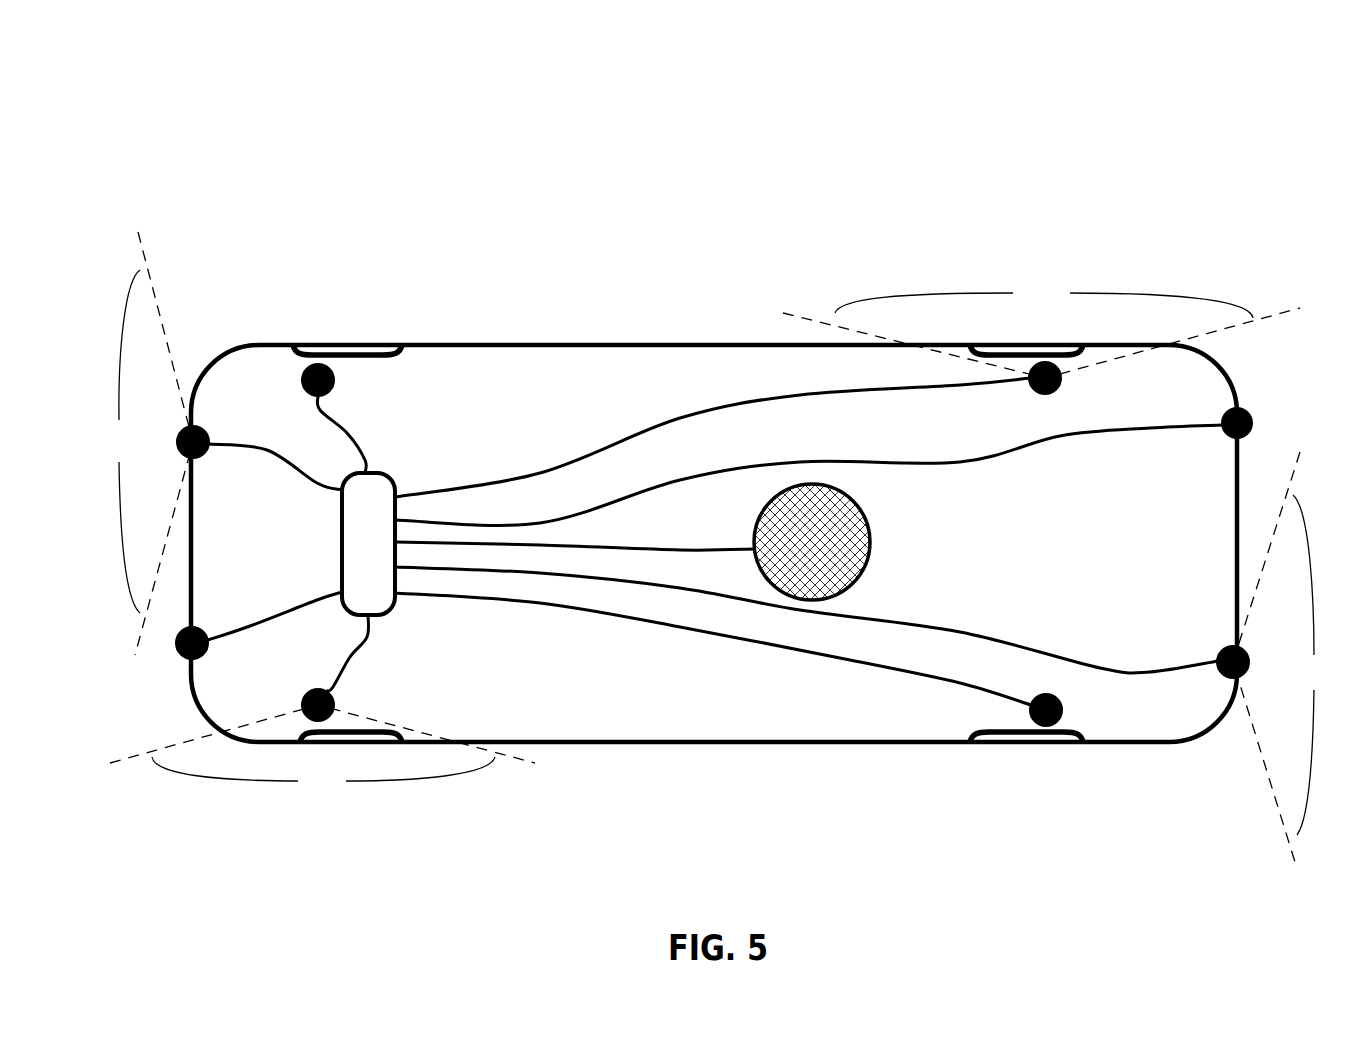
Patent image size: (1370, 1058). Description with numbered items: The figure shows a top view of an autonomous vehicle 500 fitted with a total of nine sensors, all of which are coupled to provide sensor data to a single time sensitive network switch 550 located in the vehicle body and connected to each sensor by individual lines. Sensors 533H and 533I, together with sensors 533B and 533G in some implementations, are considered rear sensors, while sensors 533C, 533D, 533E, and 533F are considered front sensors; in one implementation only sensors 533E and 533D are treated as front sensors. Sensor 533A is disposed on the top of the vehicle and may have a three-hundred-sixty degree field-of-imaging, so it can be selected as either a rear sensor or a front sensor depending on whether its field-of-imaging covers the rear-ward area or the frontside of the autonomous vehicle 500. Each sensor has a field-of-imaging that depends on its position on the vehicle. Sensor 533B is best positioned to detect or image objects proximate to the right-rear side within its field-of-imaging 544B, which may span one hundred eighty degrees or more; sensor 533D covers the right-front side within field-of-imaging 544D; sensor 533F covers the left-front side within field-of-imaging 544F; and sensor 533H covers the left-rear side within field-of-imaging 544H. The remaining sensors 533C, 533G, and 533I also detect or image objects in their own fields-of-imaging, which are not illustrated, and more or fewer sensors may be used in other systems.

The autonomous vehicle 500 is at (1240, 113).
The time sensitive network switch 550 is at (383, 555).
The sensor 533A is at (833, 553).
The sensor 533B is at (334, 702).
The sensor 533C is at (1062, 708).
The sensor 533D is at (1222, 650).
The sensor 533E is at (1225, 433).
The sensor 533F is at (1061, 382).
The sensor 533G is at (334, 383).
The sensor 533H is at (209, 437).
The sensor 533I is at (208, 648).
The field-of-imaging 544B is at (342, 790).
The field-of-imaging 544D is at (1337, 678).
The field-of-imaging 544F is at (1062, 301).
The field-of-imaging 544H is at (141, 448).